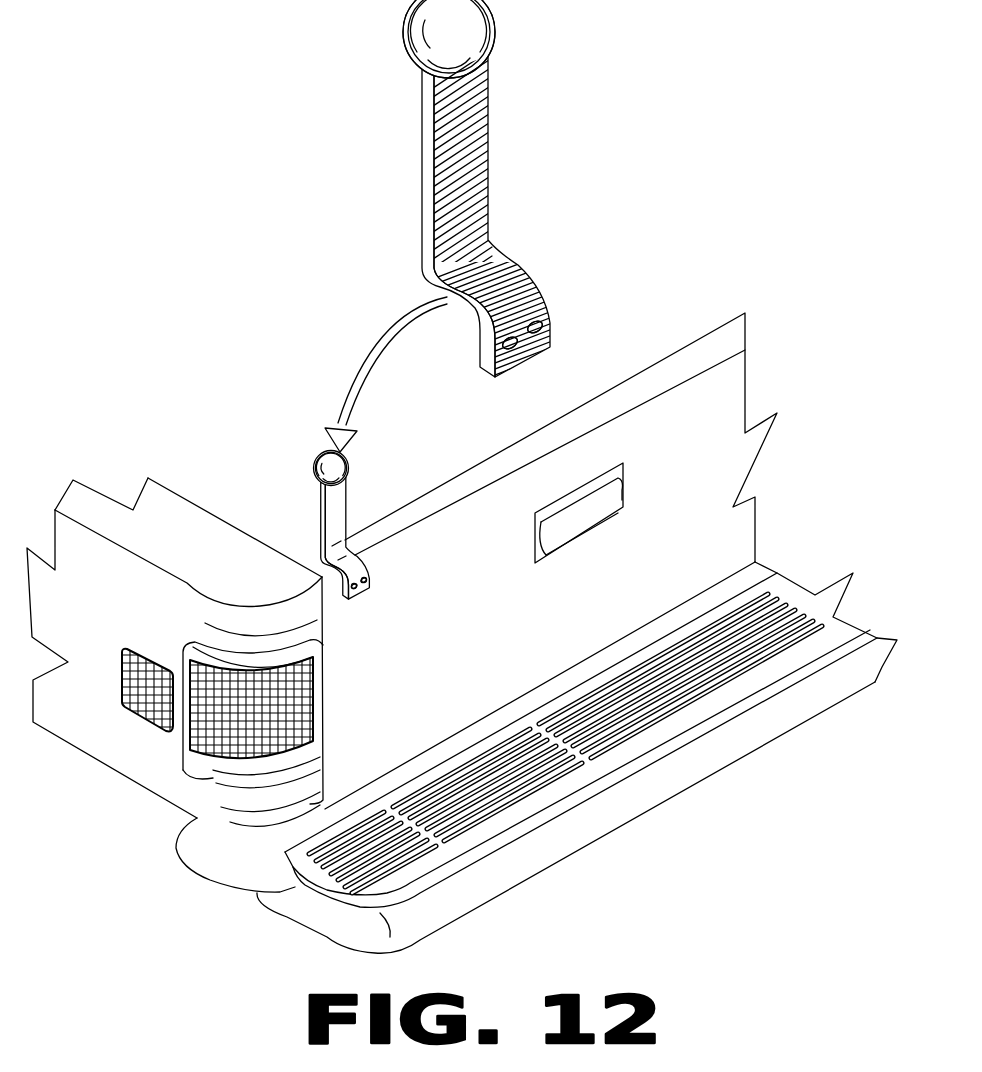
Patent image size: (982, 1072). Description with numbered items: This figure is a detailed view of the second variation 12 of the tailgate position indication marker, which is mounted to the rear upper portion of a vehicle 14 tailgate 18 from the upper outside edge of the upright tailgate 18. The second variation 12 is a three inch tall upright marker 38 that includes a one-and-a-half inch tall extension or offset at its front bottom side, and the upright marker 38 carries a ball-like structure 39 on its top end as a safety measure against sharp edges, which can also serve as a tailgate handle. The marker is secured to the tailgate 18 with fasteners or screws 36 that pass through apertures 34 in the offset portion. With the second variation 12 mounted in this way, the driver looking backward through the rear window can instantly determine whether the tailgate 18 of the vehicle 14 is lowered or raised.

The second embodiment/variation 12 is at (316, 462).
The vehicle 14 is at (123, 757).
The tailgate 18 is at (590, 597).
The apertures 34 is at (512, 338).
The fasteners or screws 36 is at (362, 588).
The upright marker 38 is at (423, 113).
The ball-like structure 39 is at (495, 32).